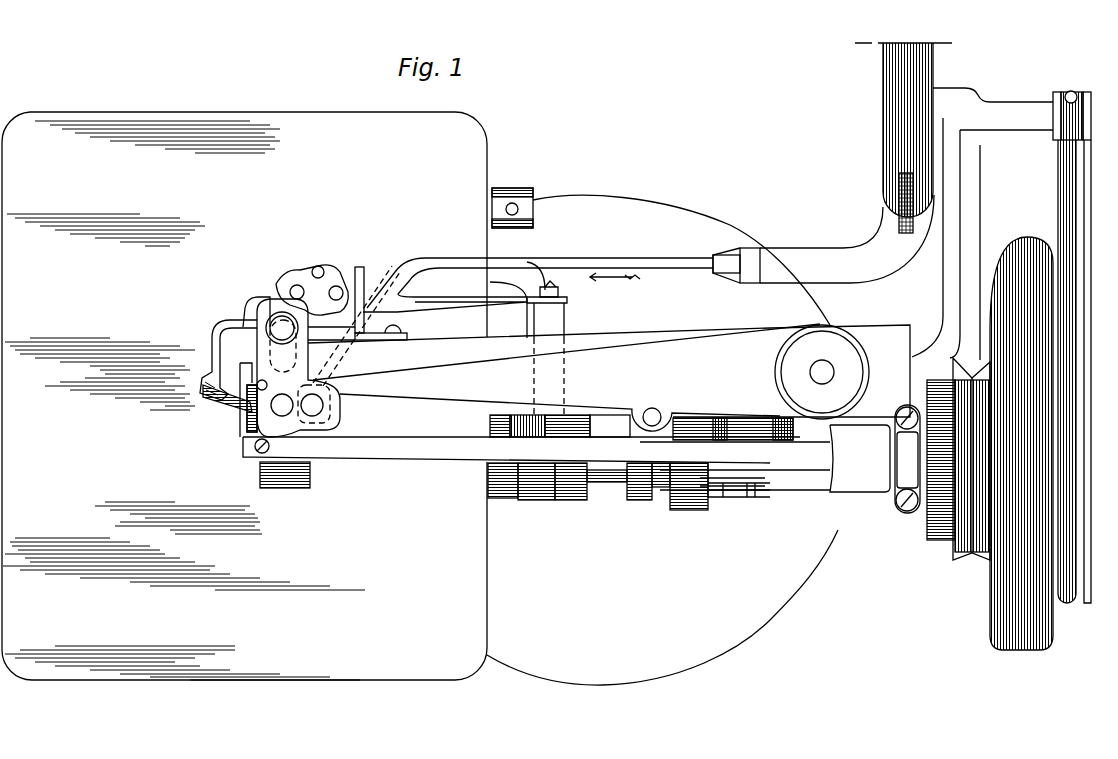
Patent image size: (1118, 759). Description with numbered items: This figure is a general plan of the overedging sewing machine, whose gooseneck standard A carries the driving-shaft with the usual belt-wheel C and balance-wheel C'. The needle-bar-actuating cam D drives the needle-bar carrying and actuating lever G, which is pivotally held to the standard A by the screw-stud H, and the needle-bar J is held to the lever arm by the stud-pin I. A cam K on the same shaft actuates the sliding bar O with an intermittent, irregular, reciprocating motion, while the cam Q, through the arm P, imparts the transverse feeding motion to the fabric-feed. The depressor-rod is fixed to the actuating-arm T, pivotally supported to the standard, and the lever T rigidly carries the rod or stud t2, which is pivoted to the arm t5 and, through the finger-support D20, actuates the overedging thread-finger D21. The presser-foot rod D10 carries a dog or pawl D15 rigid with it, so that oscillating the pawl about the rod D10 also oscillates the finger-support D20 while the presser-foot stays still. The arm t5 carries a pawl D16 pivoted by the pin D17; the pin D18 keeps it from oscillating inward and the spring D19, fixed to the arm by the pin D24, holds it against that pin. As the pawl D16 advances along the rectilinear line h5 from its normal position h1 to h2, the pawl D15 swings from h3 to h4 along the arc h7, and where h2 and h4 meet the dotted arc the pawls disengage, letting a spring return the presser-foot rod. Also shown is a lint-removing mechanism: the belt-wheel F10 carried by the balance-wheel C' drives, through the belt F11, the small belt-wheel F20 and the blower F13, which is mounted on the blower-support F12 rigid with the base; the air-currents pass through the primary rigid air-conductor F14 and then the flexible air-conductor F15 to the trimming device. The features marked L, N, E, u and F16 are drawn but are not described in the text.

The standard A is at (662, 440).
The actuating-arm T is at (421, 418).
The pivot hole L is at (660, 412).
The needle-bar J is at (245, 437).
The stud-pin I is at (262, 470).
The arm P is at (540, 500).
The cam Q is at (578, 500).
The block N is at (636, 500).
The sliding bar O is at (661, 500).
The cam K is at (684, 508).
The needle-bar carrying and actuating lever G is at (732, 462).
The screw-stud H is at (765, 466).
The bracket E is at (900, 508).
The needle-bar-actuating cam D is at (927, 540).
The belt-wheel C is at (954, 470).
The balance-wheel C' is at (1004, 443).
The blower F13 is at (895, 138).
The primary rigid air-conductor F14 is at (812, 248).
The flexible air-conductor F15 is at (585, 262).
The blower-support F12 is at (1017, 99).
The small belt-wheel F20 is at (1083, 94).
The belt F11 is at (1068, 212).
The belt-wheel F10 is at (1090, 290).
The rod or stud t2 is at (560, 318).
The arm t5 is at (437, 299).
The angle bracket u is at (367, 264).
The pivot lever F16 is at (279, 412).
The presser-foot rod D10 is at (277, 327).
The arc h7 is at (252, 347).
The overedging thread-finger D21 is at (240, 402).
The overedging thread-finger support D20 is at (210, 400).
The dog or pawl D15 is at (247, 298).
The pawl or dog D16 is at (258, 297).
The pin D17 is at (297, 285).
The pin D18 is at (320, 266).
The spring D19 is at (338, 286).
The pin D24 is at (334, 302).
The normal position h1 is at (271, 300).
The position h2 is at (259, 300).
The position h3 is at (262, 300).
The position h4 is at (255, 296).
The rectilinear line h5 is at (252, 298).